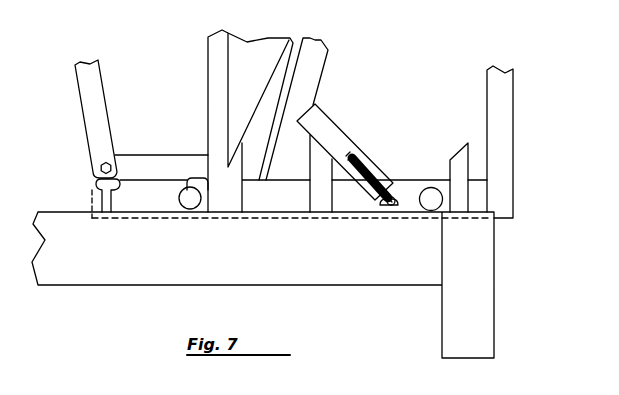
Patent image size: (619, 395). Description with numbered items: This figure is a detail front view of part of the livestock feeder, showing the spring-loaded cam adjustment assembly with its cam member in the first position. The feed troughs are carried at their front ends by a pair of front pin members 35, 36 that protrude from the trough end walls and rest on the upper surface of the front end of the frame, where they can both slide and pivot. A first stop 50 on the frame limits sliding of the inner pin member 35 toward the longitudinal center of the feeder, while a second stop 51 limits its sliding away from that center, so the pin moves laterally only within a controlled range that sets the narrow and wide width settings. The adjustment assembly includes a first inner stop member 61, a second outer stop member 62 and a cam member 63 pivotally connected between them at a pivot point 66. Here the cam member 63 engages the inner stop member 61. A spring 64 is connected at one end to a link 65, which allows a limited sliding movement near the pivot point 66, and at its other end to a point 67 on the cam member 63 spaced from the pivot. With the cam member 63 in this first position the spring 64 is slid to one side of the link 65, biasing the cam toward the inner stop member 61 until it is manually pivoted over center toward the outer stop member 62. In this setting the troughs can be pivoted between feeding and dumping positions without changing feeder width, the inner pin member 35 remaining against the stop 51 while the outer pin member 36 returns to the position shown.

The front pin member 35 is at (181, 200).
The front pin member 36 is at (438, 205).
The first stop 50 is at (97, 193).
The second stop 51 is at (193, 178).
The first inner stop member 61 is at (318, 163).
The second outer stop member 62 is at (462, 163).
The cam member 63 is at (321, 123).
The spring 64 is at (371, 164).
The link 65 is at (387, 209).
The pivot point 66 is at (393, 196).
The point on the cam member 67 is at (351, 156).